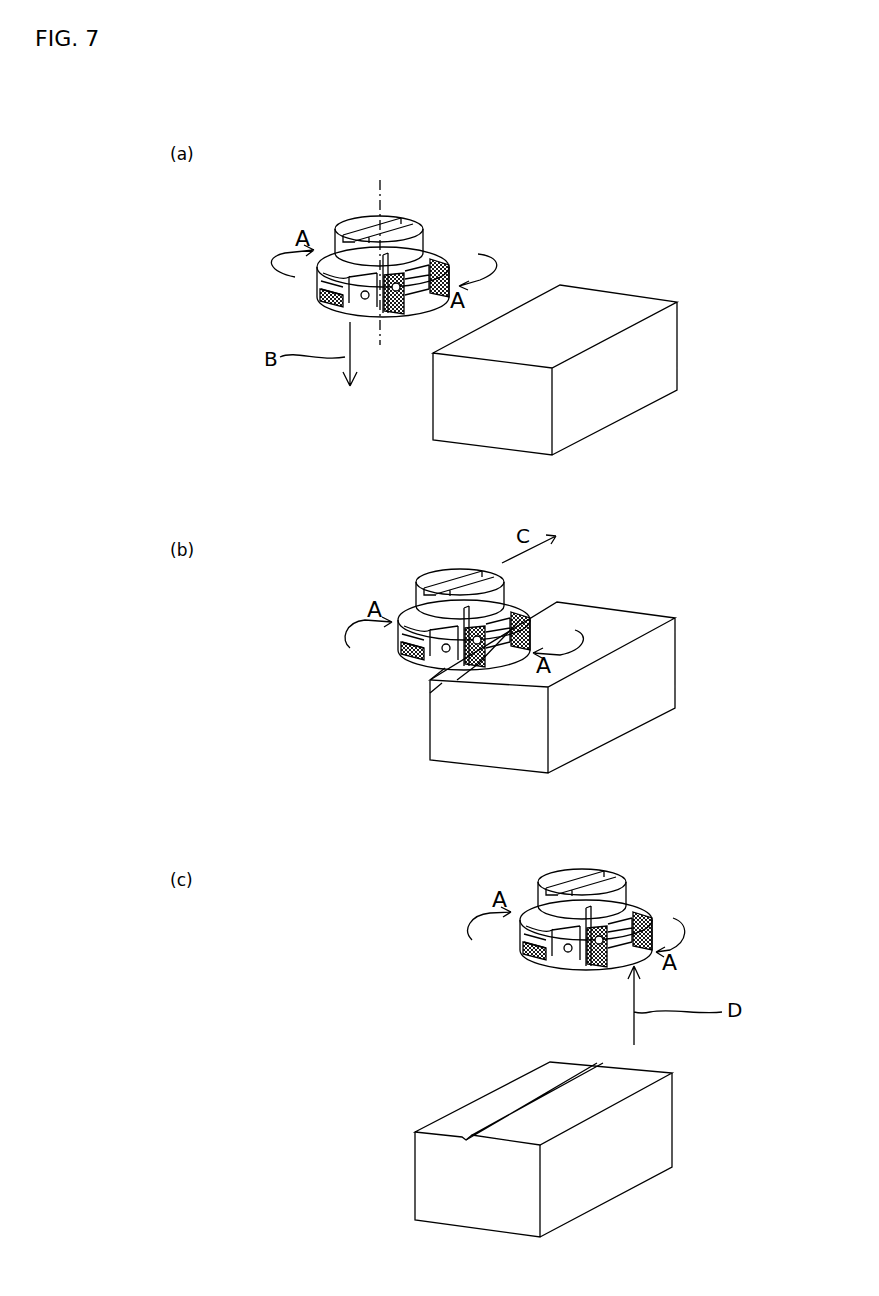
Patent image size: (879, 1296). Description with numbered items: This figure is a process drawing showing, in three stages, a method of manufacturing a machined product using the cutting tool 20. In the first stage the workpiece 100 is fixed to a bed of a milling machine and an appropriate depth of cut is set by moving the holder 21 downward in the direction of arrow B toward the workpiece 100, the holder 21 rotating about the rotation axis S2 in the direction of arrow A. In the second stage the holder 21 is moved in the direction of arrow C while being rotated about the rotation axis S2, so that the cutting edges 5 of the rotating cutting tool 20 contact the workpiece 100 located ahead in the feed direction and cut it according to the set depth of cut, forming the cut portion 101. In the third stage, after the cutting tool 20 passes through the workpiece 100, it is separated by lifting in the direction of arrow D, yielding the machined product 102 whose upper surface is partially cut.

The cutting edge 5 is at (388, 318).
The cutting tool 20 is at (524, 567).
The holder 21 is at (351, 228).
The workpiece 100 is at (648, 365).
The machined surface 101 is at (427, 683).
The machined product 102 is at (645, 1150).
The rotation axis S2 is at (383, 184).